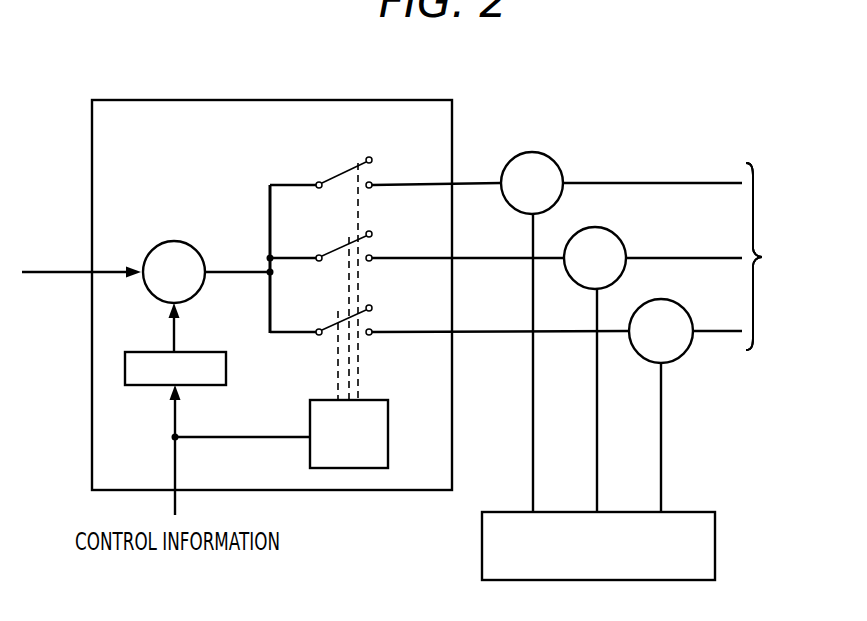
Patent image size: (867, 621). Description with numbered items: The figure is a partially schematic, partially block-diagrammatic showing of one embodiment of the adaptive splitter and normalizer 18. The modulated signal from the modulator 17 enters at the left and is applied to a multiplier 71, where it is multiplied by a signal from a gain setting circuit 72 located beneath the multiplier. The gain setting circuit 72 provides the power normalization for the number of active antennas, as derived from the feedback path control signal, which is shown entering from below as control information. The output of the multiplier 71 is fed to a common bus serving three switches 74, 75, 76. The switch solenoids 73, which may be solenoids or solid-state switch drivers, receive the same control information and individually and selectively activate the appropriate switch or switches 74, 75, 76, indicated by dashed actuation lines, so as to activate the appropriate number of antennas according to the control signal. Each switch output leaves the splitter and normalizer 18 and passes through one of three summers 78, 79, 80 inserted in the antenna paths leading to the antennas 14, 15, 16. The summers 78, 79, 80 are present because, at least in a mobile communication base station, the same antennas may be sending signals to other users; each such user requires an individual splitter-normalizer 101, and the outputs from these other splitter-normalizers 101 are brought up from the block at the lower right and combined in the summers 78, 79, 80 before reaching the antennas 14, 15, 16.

The adaptive splitter and normalizer 18 is at (190, 100).
The modulator 17 is at (81, 247).
The multiplier 71 is at (174, 241).
The gain setting circuit 72 is at (197, 352).
The switch solenoids 73 is at (378, 400).
The switch 74 is at (337, 321).
The switch 75 is at (337, 247).
The switch 76 is at (337, 176).
The summer 78 is at (533, 152).
The summer 79 is at (600, 227).
The summer 80 is at (667, 299).
The splitter-normalizer 101 is at (697, 512).
The antenna 14 is at (801, 256).
The antenna 15 is at (754, 256).
The antenna 16 is at (754, 256).